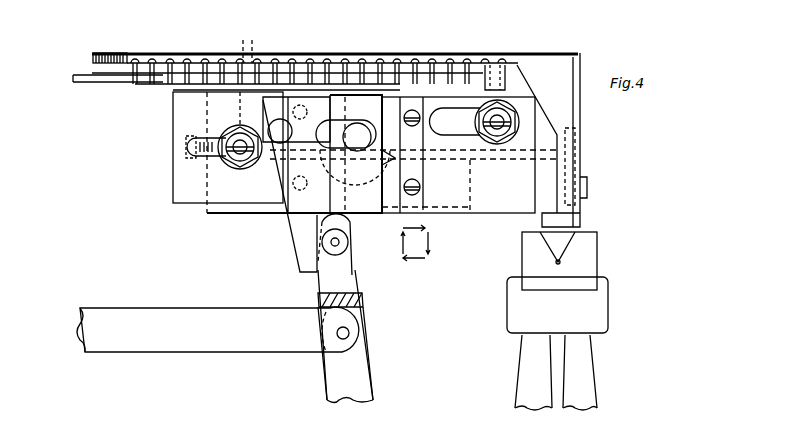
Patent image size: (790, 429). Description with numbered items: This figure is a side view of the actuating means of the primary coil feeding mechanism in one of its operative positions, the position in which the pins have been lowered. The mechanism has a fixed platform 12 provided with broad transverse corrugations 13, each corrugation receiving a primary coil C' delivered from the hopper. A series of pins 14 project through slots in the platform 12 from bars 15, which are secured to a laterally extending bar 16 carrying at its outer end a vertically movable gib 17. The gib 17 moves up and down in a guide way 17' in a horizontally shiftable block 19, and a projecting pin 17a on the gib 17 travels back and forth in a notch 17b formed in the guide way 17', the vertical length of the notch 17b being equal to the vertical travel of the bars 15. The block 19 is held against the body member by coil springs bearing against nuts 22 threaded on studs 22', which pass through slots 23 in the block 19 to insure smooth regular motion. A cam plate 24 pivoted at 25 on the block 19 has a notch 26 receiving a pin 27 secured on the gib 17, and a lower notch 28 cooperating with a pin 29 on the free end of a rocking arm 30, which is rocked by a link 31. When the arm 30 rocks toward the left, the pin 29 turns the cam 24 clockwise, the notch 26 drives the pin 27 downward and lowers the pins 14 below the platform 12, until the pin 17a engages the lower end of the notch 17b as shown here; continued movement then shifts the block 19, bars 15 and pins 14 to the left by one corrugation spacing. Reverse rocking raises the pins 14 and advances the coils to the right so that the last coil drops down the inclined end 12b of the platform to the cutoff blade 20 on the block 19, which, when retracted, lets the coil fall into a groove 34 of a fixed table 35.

The platform 12 is at (92, 56).
The inclined end of the platform 12b is at (525, 75).
The corrugations 13 is at (246, 62).
The pins 14 is at (150, 68).
The bars 15 is at (95, 78).
The laterally extending bar 16 is at (380, 84).
The gib 17 is at (294, 117).
The projecting pin 17a is at (412, 160).
The notch 17b is at (398, 152).
The guide way 17' is at (426, 195).
The horizontally shiftable block 19 is at (175, 160).
The cutoff blade 20 is at (500, 168).
The nuts 22 is at (390, 146).
The studs 22' is at (394, 139).
The slots 23 is at (212, 160).
The cam plate 24 is at (292, 225).
The pivot 25 is at (285, 138).
The notch 26 is at (340, 122).
The pin 27 is at (356, 142).
The notch 28 is at (315, 275).
The pin 29 is at (364, 282).
The rocking arm 30 is at (380, 367).
The link 31 is at (265, 342).
The groove 34 is at (562, 262).
The fixed table 35 is at (600, 296).
The primary coil C' is at (340, 54).